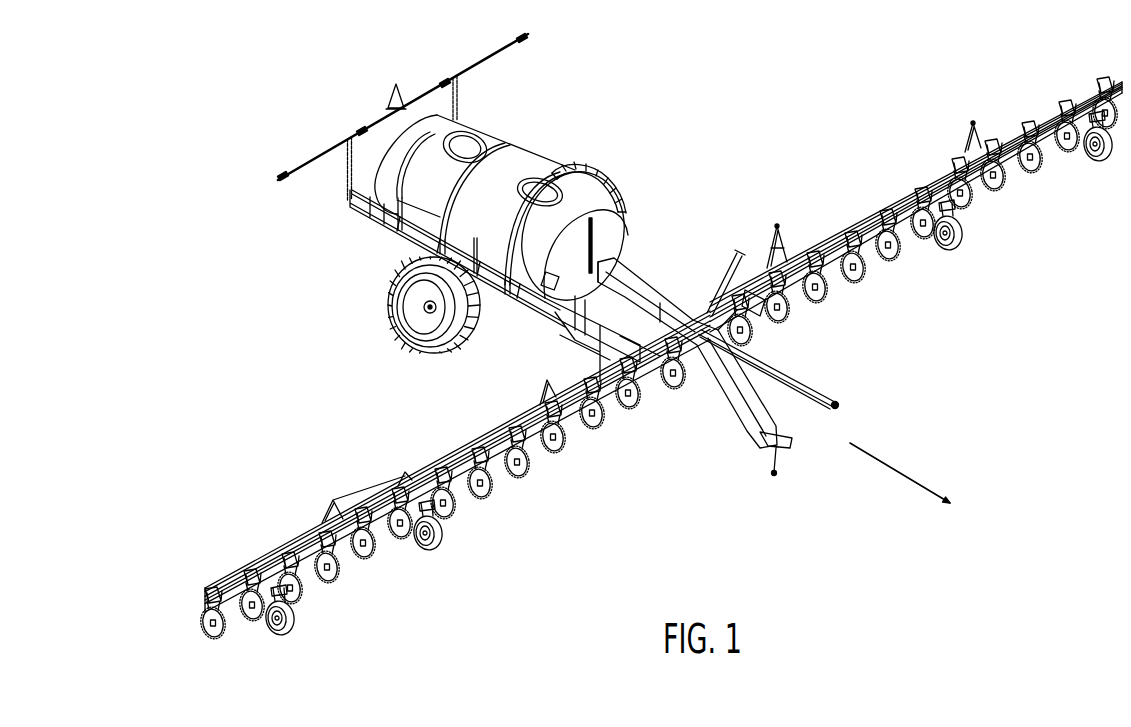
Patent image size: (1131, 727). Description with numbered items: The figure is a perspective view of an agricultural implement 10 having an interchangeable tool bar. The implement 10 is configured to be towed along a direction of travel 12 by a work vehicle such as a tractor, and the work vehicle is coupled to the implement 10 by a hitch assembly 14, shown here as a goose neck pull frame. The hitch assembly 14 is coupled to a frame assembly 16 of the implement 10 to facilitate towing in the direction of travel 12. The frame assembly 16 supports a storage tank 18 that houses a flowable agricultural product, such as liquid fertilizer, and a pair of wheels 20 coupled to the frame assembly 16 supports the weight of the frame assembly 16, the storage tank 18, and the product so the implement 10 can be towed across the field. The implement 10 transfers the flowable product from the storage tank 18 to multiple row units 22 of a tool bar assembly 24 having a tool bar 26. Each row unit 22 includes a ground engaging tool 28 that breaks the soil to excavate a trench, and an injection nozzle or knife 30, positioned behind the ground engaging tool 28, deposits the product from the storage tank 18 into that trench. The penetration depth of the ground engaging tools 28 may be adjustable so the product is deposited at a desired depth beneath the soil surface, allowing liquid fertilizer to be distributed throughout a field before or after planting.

The agricultural implement 10 is at (692, 157).
The direction of travel 12 is at (897, 467).
The hitch assembly 14 is at (681, 305).
The frame assembly 16 is at (381, 232).
The storage tank 18 is at (522, 162).
The wheels 20 is at (600, 175).
The row units 22 is at (1062, 182).
The tool bar assembly 24 is at (657, 424).
The tool bar 26 is at (626, 385).
The ground engaging tool 28 is at (223, 637).
The injection nozzle or knife 30 is at (198, 607).